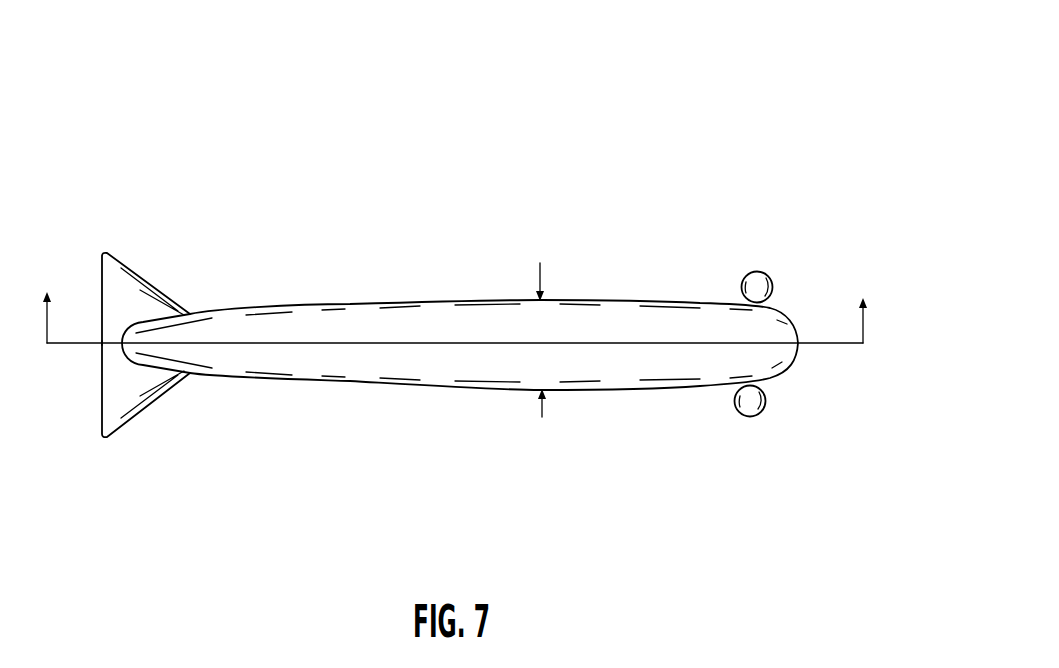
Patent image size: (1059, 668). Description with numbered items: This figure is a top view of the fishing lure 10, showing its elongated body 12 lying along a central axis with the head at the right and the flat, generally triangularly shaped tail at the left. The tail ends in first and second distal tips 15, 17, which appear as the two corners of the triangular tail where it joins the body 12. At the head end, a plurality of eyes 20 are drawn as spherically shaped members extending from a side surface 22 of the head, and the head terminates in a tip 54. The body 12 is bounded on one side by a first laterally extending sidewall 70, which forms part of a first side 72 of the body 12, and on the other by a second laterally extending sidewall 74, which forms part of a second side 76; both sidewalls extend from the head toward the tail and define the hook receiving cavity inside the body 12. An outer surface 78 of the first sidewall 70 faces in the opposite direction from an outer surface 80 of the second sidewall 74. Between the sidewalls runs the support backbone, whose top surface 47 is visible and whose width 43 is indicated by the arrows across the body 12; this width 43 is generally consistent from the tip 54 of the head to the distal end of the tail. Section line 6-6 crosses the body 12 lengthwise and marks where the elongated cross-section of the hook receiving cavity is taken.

The section line 6- 6 is at (461, 300).
The fishing lure 10 is at (640, 126).
The body 12 is at (682, 381).
The first distal tip 15 is at (102, 437).
The second distal tip 17 is at (104, 252).
The eyes 20 is at (767, 272).
The side surface 22 is at (736, 340).
The width of the support backbone 43 is at (538, 418).
The top surface 47 is at (603, 336).
The tip of the head 54 is at (798, 360).
The first laterally extending sidewall 70 is at (598, 299).
The first side 72 is at (482, 300).
The second laterally extending sidewall 74 is at (610, 393).
The second side 76 is at (462, 388).
The outer surface of the first sidewall 78 is at (572, 300).
The outer surface of the second sidewall 80 is at (585, 391).